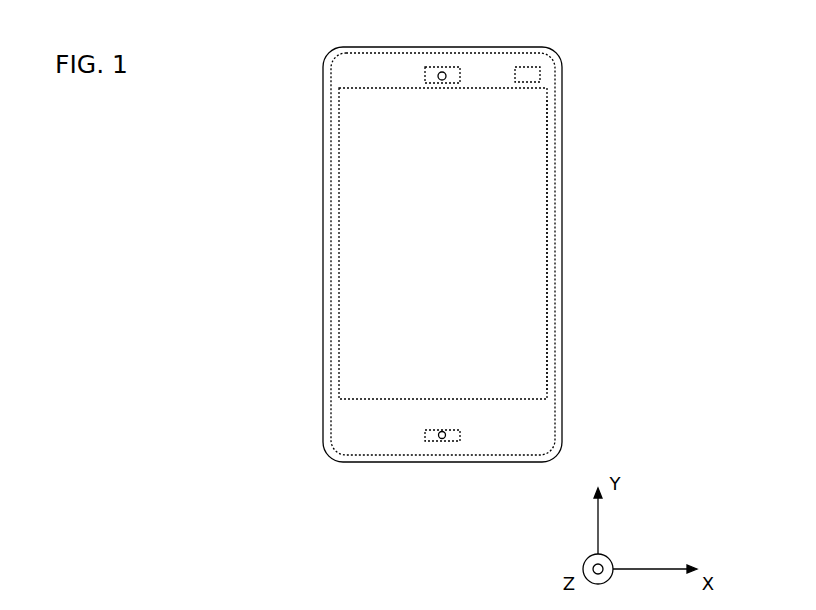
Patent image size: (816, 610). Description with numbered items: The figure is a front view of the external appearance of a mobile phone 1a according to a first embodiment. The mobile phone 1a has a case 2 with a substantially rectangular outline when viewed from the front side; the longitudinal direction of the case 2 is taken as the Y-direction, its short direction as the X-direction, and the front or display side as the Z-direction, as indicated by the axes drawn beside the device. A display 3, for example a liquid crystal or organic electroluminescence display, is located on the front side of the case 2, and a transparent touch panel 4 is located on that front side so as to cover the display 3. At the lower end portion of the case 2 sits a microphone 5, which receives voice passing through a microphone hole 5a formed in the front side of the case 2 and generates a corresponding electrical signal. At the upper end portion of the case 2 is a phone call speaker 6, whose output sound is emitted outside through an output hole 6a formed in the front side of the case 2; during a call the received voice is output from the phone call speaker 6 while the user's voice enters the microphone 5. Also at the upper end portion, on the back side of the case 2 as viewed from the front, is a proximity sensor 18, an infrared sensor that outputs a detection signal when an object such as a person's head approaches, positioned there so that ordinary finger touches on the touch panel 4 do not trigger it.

The mobile phone 1a is at (566, 42).
The case 2 is at (562, 122).
The display 3 is at (363, 157).
The touch panel 4 is at (537, 318).
The microphone 5 is at (437, 441).
The microphone hole 5a is at (443, 439).
The phone call speaker 6 is at (445, 68).
The output hole 6a is at (442, 72).
The proximity sensor 18 is at (521, 67).